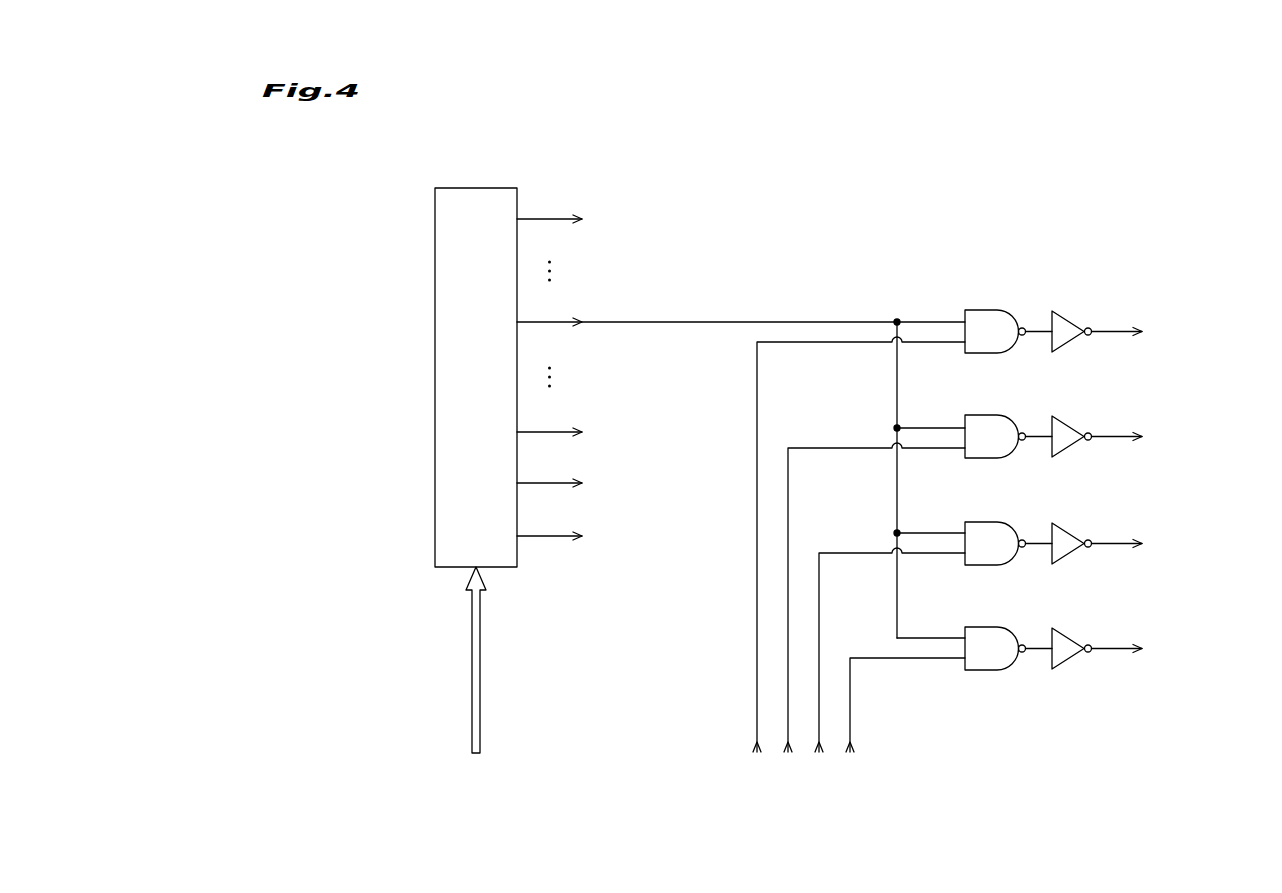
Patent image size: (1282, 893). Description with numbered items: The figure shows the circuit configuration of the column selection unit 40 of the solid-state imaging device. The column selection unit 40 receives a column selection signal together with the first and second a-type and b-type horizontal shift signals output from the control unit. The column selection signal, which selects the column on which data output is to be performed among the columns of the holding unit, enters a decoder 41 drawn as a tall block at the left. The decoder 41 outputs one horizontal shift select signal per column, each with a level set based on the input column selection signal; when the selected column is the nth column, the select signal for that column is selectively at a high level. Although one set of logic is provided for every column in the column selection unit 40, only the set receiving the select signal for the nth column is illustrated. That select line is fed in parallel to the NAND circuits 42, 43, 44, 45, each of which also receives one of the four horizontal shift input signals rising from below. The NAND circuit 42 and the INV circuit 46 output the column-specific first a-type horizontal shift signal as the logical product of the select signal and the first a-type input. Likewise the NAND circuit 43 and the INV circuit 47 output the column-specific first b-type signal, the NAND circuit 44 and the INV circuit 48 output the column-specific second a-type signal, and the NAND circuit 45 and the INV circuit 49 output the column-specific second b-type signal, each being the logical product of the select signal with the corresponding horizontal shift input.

The column selection unit 40 is at (1027, 136).
The decoder 41 is at (487, 187).
The NAND circuit 42 is at (990, 308).
The NAND circuit 43 is at (990, 413).
The NAND circuit 44 is at (990, 520).
The NAND circuit 45 is at (990, 625).
The INV circuit 46 is at (1062, 324).
The INV circuit 47 is at (1062, 429).
The INV circuit 48 is at (1062, 536).
The INV circuit 49 is at (1062, 641).